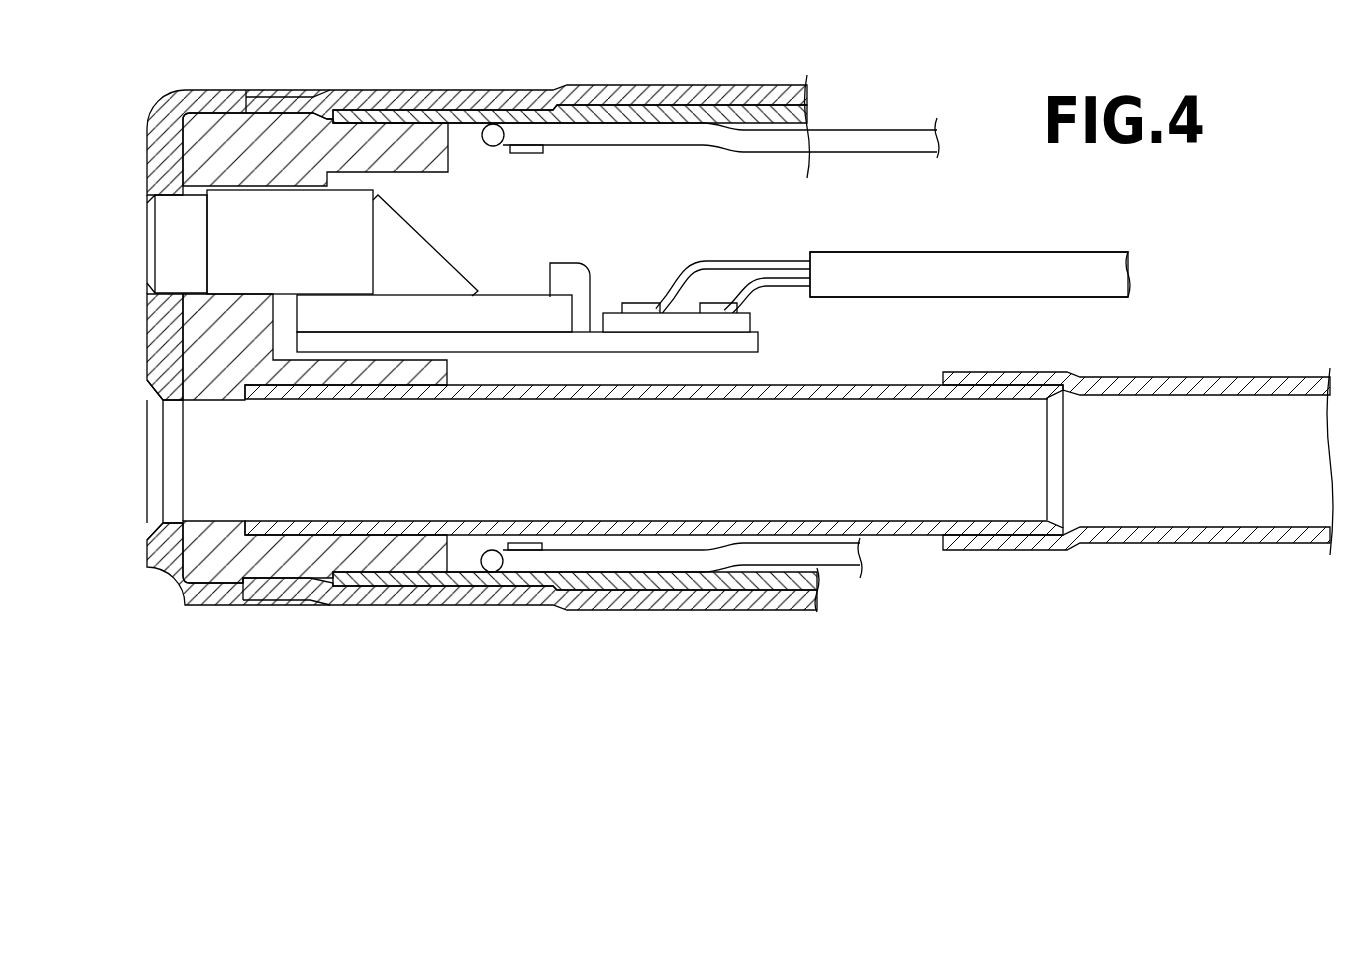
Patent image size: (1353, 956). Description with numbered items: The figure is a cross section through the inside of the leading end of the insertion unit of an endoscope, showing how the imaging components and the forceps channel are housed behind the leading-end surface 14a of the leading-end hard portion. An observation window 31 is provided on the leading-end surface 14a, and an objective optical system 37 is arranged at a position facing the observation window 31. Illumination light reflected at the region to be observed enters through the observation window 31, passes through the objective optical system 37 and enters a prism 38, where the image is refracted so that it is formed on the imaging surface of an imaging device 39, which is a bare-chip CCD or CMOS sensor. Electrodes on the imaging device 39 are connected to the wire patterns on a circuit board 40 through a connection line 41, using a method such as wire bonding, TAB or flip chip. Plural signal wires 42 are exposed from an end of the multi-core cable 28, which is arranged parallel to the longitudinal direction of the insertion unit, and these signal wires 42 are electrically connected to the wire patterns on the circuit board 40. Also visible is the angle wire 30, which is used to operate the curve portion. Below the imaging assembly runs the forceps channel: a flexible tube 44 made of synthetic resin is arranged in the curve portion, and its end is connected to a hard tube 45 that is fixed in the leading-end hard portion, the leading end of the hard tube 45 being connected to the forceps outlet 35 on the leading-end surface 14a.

The leading-end surface 14a is at (147, 563).
The multi-core cable 28 is at (1065, 262).
The angle wire 30 is at (880, 136).
The observation window 31 is at (147, 198).
The forceps outlet 35 is at (147, 398).
The objective optical system 37 is at (220, 248).
The prism 38 is at (418, 231).
The imaging device 39 is at (502, 291).
The circuit board 40 is at (543, 353).
The connection line 41 is at (559, 262).
The signal wires 42 is at (742, 261).
The flexible tube 44 is at (1243, 527).
The hard tube 45 is at (784, 522).